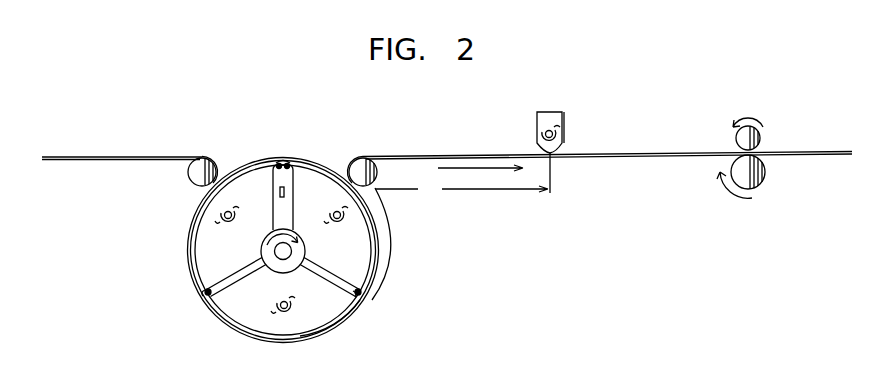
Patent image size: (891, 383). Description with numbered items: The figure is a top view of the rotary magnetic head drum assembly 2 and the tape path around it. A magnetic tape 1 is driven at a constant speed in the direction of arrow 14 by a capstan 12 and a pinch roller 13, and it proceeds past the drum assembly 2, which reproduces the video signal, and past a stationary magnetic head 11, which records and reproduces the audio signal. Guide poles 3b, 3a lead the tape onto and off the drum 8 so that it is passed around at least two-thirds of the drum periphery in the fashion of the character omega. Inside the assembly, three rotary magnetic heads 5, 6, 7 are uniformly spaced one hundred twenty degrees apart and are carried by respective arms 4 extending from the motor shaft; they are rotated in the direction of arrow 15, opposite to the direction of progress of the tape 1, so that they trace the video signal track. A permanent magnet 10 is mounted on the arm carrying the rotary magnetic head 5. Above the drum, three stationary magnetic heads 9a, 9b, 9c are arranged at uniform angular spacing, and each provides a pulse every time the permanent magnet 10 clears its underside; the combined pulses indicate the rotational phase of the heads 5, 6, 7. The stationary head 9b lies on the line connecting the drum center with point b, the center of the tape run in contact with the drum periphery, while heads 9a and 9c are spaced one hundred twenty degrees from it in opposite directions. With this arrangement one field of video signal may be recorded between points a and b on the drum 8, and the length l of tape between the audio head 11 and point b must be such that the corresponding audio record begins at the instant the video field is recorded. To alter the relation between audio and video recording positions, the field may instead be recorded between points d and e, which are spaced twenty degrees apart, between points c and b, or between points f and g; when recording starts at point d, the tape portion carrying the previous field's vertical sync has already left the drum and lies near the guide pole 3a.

The magnetic tape 1 is at (605, 151).
The rotary magnetic head drum assembly 2 is at (289, 113).
The guide pole 3a is at (358, 168).
The guide pole 3b is at (201, 168).
The arms 4 is at (327, 268).
The rotary magnetic head 5 is at (281, 162).
The rotary magnetic head 6 is at (214, 308).
The rotary magnetic head 7 is at (355, 300).
The drum 8 is at (388, 268).
The stationary magnetic head 9a is at (343, 214).
The stationary magnetic head 9b is at (280, 318).
The stationary magnetic head 9c is at (218, 213).
The permanent magnet 10 is at (286, 191).
The stationary magnetic head 11 is at (563, 131).
The capstan 12 is at (736, 139).
The pinch roller 13 is at (733, 170).
The arrow 14 is at (438, 168).
The arrow 15 is at (266, 239).
The point a is at (191, 197).
The point b is at (283, 344).
The point c is at (374, 199).
The point d is at (363, 293).
The point e is at (207, 294).
The point f is at (295, 359).
The point g is at (187, 243).
The tape length l is at (461, 192).